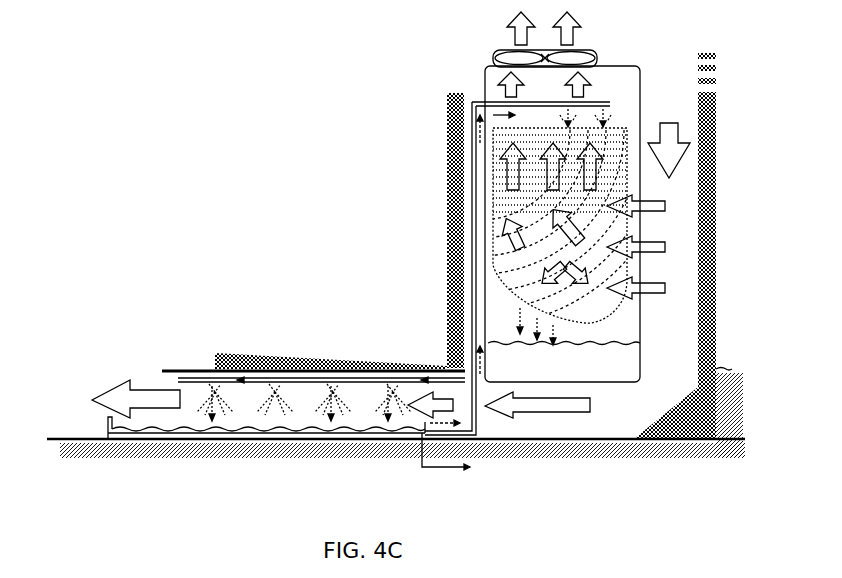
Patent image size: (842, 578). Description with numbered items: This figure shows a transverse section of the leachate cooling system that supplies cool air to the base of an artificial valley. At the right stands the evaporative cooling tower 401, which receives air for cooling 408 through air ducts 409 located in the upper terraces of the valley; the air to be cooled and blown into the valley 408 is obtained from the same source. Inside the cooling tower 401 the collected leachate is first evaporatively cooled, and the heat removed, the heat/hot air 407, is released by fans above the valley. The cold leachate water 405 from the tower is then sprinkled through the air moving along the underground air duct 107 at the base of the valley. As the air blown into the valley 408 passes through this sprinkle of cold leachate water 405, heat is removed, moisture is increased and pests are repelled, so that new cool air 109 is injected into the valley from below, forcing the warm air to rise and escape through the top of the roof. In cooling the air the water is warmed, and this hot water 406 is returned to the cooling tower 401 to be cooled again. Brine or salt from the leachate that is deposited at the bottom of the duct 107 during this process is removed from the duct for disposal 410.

The underground air duct 107 is at (237, 397).
The new cool air 109 is at (97, 395).
The cooling tower 401 is at (614, 65).
The cold leachate water 405 is at (623, 362).
The hot water 406 is at (554, 129).
The heat/hot air 407 is at (561, 90).
The air for cooling 408 is at (690, 233).
The air ducts 409 is at (726, 67).
The brine/salt disposal 410 is at (446, 472).